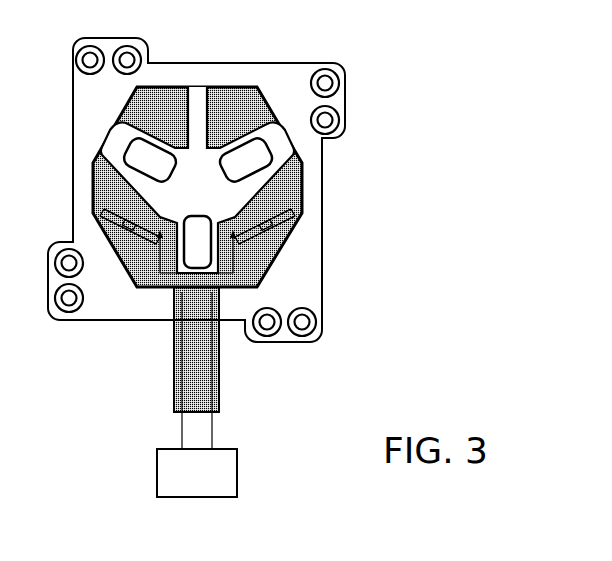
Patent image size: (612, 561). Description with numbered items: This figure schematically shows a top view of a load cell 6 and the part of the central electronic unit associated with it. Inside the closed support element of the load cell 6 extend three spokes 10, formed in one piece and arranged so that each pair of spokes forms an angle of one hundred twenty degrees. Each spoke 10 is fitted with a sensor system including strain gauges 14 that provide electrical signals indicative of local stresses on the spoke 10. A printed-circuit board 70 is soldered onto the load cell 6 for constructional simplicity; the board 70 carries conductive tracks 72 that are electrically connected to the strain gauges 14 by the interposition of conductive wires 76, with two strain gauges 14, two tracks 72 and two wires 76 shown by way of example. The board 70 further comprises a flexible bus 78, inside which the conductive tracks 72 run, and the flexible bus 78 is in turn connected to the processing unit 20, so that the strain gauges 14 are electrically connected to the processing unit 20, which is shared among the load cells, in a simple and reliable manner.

The load cell 6 is at (332, 199).
The spoke 10 is at (197, 98).
The strain gauge 14 is at (105, 207).
The processing unit 20 is at (168, 461).
The printed-circuit board 70 is at (229, 110).
The conductive tracks 72 is at (177, 376).
The conductive wires 76 is at (240, 224).
The flexible bus 78 is at (220, 405).